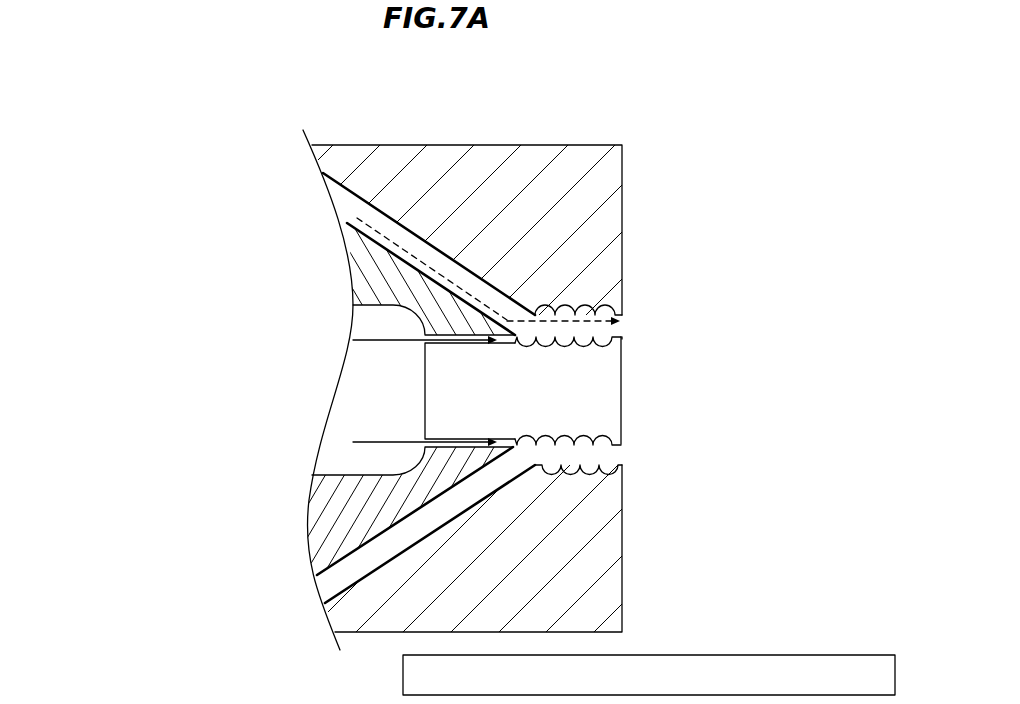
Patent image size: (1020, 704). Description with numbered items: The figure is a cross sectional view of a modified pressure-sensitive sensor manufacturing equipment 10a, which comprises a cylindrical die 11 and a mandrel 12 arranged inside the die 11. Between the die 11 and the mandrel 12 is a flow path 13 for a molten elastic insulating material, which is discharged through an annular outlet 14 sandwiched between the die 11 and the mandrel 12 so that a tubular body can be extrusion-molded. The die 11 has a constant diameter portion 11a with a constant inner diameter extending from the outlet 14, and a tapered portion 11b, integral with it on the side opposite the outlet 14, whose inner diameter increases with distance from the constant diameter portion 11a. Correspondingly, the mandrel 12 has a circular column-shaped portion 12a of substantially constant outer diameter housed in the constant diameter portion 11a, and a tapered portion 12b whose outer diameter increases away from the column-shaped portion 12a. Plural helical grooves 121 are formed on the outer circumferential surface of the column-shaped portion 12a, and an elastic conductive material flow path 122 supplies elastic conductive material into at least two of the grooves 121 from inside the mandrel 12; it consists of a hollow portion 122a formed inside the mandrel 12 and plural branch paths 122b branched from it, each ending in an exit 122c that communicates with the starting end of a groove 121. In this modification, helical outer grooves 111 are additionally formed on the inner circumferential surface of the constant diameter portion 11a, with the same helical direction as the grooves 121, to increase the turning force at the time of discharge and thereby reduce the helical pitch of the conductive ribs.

The pressure-sensitive sensor manufacturing equipment 10a is at (395, 121).
The die 11 is at (622, 145).
The constant diameter portion 11a is at (610, 178).
The tapered portion 11b is at (459, 160).
The mandrel 12 is at (612, 380).
The column-shaped portion 12a is at (607, 413).
The tapered portion 12b is at (320, 556).
The flow path 13 is at (345, 202).
The outlet 14 is at (633, 457).
The outer grooves 111 is at (616, 304).
The grooves 121 is at (603, 445).
The elastic conductive material flow path 122 is at (325, 413).
The hollow portion 122a is at (325, 453).
The branch paths 122b is at (425, 346).
The exit 122c is at (562, 306).